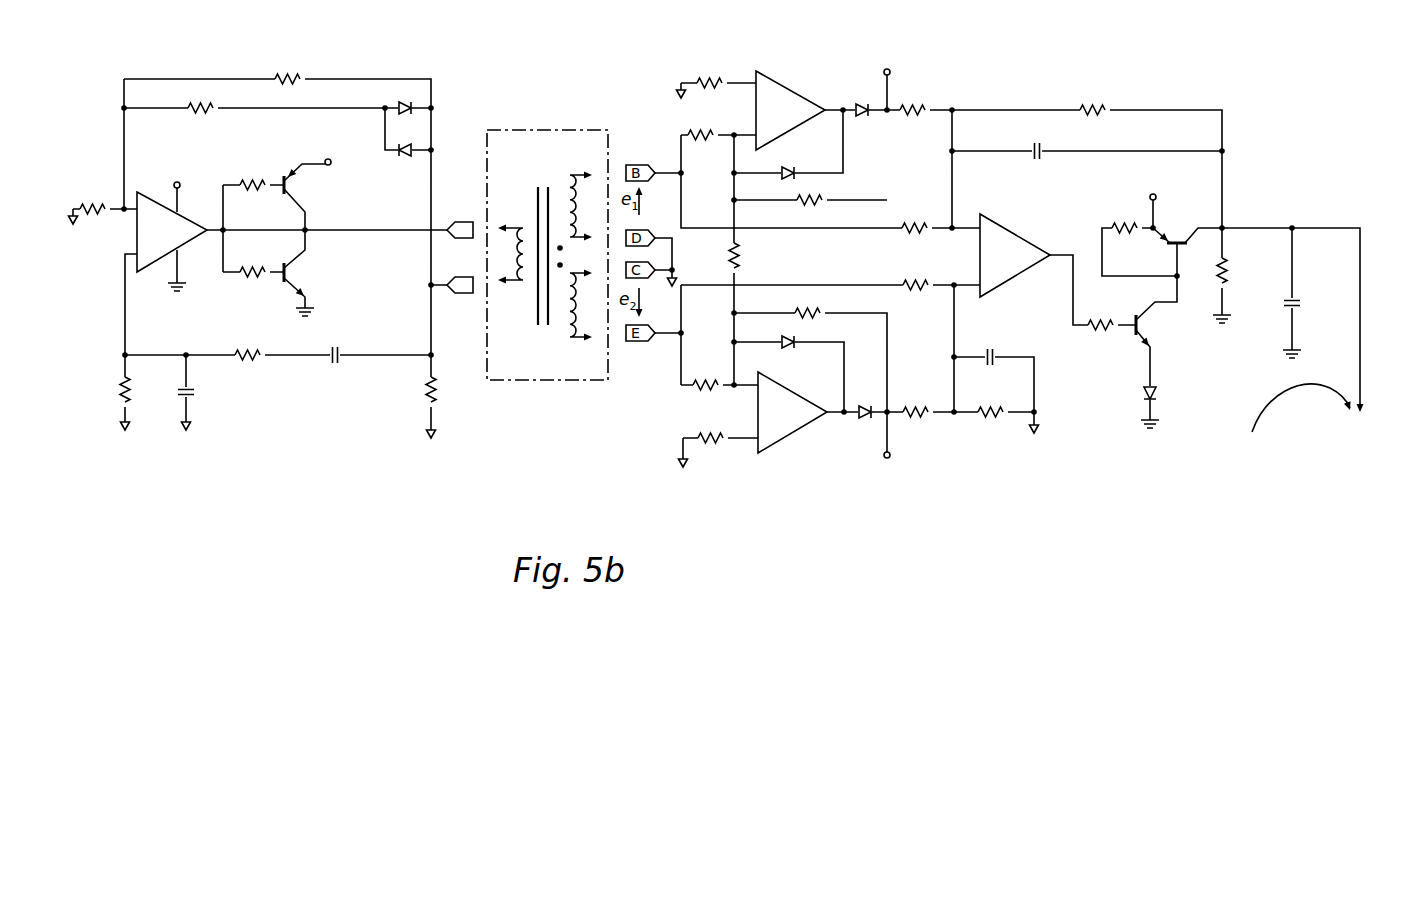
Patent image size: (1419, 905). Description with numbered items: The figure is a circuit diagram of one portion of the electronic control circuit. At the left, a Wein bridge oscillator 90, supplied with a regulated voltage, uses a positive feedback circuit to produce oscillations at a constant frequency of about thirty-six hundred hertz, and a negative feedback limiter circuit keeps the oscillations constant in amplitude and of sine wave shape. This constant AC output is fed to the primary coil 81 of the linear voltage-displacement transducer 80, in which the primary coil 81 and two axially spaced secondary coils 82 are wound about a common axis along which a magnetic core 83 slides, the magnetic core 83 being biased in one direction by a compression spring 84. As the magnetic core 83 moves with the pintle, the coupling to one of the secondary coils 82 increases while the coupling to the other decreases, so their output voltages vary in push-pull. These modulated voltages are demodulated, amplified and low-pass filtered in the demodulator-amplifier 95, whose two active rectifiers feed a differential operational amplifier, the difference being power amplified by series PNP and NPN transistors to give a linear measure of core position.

The linear voltage-displacement transducer 80 is at (547, 307).
The primary coil 81 is at (517, 257).
The secondary coils 82 is at (578, 199).
The magnetic core 83 is at (537, 217).
The compression spring 84 is at (576, 305).
The Wein bridge oscillator 90 is at (283, 403).
The demodulator-amplifier 95 is at (792, 457).